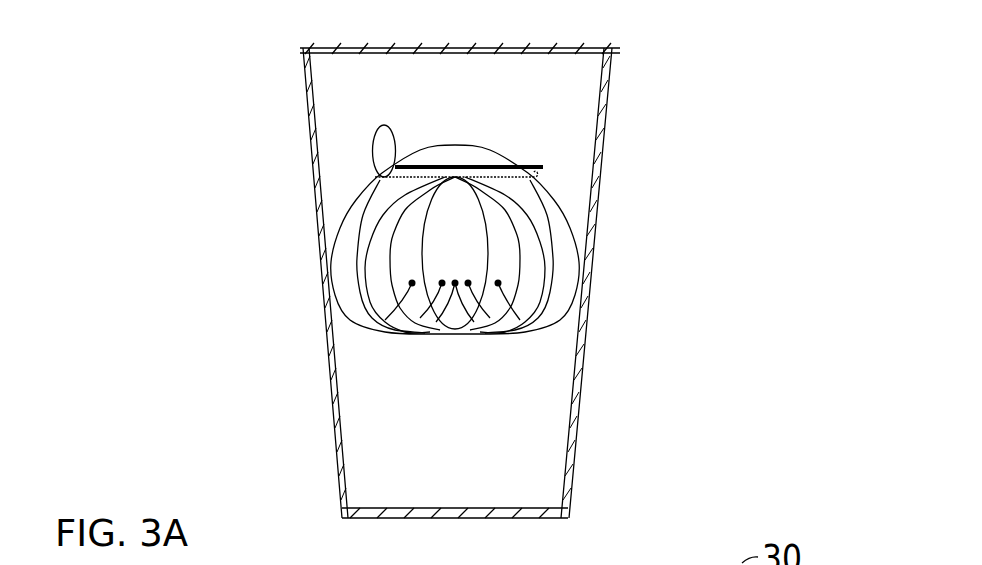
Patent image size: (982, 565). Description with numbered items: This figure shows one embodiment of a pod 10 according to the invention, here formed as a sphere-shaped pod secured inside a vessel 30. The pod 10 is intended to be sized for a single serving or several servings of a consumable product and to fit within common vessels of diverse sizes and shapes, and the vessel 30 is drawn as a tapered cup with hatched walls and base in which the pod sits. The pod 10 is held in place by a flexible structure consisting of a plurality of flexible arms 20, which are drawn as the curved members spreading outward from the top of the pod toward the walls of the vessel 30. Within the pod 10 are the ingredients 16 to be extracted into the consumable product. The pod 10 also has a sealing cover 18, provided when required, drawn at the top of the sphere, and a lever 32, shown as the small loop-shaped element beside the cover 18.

The pod 10 is at (541, 204).
The ingredients 16 is at (383, 229).
The sealing cover 18 is at (450, 145).
The flexible arms 20 is at (563, 302).
The vessel 30 is at (605, 102).
The lever 32 is at (373, 152).